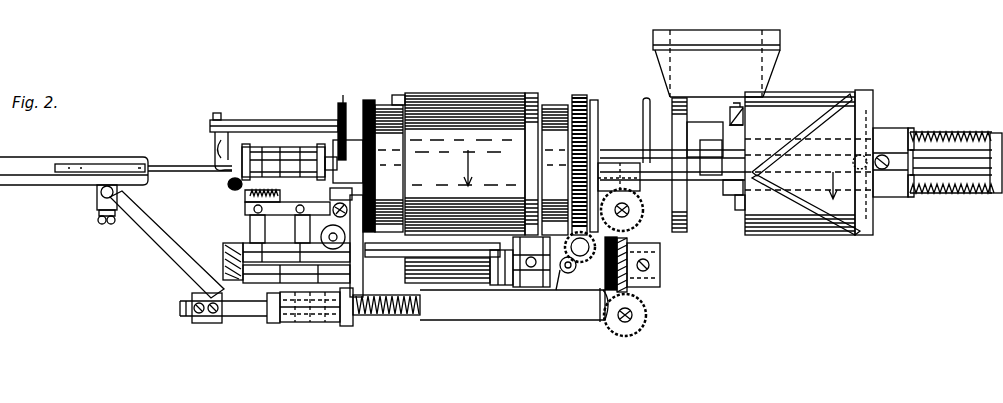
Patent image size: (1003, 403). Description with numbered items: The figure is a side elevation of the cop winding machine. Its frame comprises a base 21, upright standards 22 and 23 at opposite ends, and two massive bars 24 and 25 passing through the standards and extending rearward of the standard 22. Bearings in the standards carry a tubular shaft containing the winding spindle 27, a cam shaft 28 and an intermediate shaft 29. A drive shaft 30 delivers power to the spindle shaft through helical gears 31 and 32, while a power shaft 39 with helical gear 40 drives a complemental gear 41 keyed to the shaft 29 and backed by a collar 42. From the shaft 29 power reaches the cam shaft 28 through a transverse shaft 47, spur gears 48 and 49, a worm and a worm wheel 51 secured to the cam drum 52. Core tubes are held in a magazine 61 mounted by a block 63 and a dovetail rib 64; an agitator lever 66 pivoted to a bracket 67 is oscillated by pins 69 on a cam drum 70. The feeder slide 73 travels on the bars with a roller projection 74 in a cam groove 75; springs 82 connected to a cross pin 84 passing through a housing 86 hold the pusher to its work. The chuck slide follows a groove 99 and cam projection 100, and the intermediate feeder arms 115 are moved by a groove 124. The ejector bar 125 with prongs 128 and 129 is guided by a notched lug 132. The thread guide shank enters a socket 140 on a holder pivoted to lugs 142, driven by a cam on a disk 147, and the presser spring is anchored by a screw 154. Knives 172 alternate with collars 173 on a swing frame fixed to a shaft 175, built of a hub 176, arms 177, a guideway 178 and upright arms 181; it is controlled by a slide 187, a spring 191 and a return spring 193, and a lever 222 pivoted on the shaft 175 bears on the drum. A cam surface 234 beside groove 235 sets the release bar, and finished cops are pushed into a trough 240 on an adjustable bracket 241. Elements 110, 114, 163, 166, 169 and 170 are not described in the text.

The base 21 is at (502, 305).
The upright web or standard 22 is at (592, 170).
The upright web or standard 23 is at (358, 245).
The rod or bar 24 is at (750, 142).
The rod or bar 25 is at (735, 195).
The mandrel or spindle 27 is at (178, 172).
The cam shaft 28 is at (650, 165).
The intermediate shaft 29 is at (466, 265).
The drive shaft 30 is at (630, 220).
The helical gear 31 is at (630, 210).
The helical gear 32 is at (622, 163).
The power shaft 39 is at (633, 314).
The helical gear 40 is at (634, 325).
The helical gear 41 is at (647, 290).
The collar 42 is at (651, 258).
The transverse shaft 47 is at (568, 280).
The spur gear 48 is at (564, 275).
The spur gear 49 is at (582, 262).
The worm wheel 51 is at (580, 95).
The cam drum 52 is at (448, 93).
The magazine 61 is at (715, 55).
The block 63 is at (712, 148).
The dovetail rib 64 is at (700, 125).
The lever 66 is at (736, 108).
The bracket 67 is at (748, 112).
The pins 69 is at (745, 210).
The cam drum 70 is at (790, 118).
The slide 73 is at (885, 128).
The roller projection 74 is at (867, 200).
The cam groove 75 is at (853, 93).
The springs 82 is at (940, 132).
The cross pin 84 is at (996, 133).
The housing 86 is at (948, 165).
The groove 99 is at (390, 108).
The cam projection 100 is at (398, 95).
The upright 110 is at (682, 100).
The guide bar 114 is at (646, 105).
The arms 115 is at (640, 180).
The groove 124 is at (530, 93).
The bar 125 is at (243, 127).
The prong 128 is at (242, 127).
The prong 129 is at (213, 148).
The notched lug 132 is at (343, 103).
The socket 140 is at (245, 228).
The lugs 142 is at (300, 322).
The disk 147 is at (267, 293).
The screw 154 is at (355, 297).
The post 163 is at (340, 135).
The sleeve line 166 is at (320, 322).
The pivot 169 is at (347, 208).
The drum end band 170 is at (369, 100).
The circular disk knives 172 is at (267, 150).
The spacing sleeves or collars 173 is at (292, 150).
The shaft 175 is at (448, 250).
The sleeve or hub 176 is at (262, 245).
The arms 177 is at (260, 232).
The guideway 178 is at (250, 196).
The upright arms 181 is at (228, 184).
The slide 187 is at (350, 192).
The spring 191 is at (245, 210).
The spring 193 is at (604, 290).
The lever 222 is at (528, 290).
The cam surface 234 is at (552, 200).
The groove 235 is at (553, 105).
The trough 240 is at (25, 176).
The adjustable bracket 241 is at (128, 228).